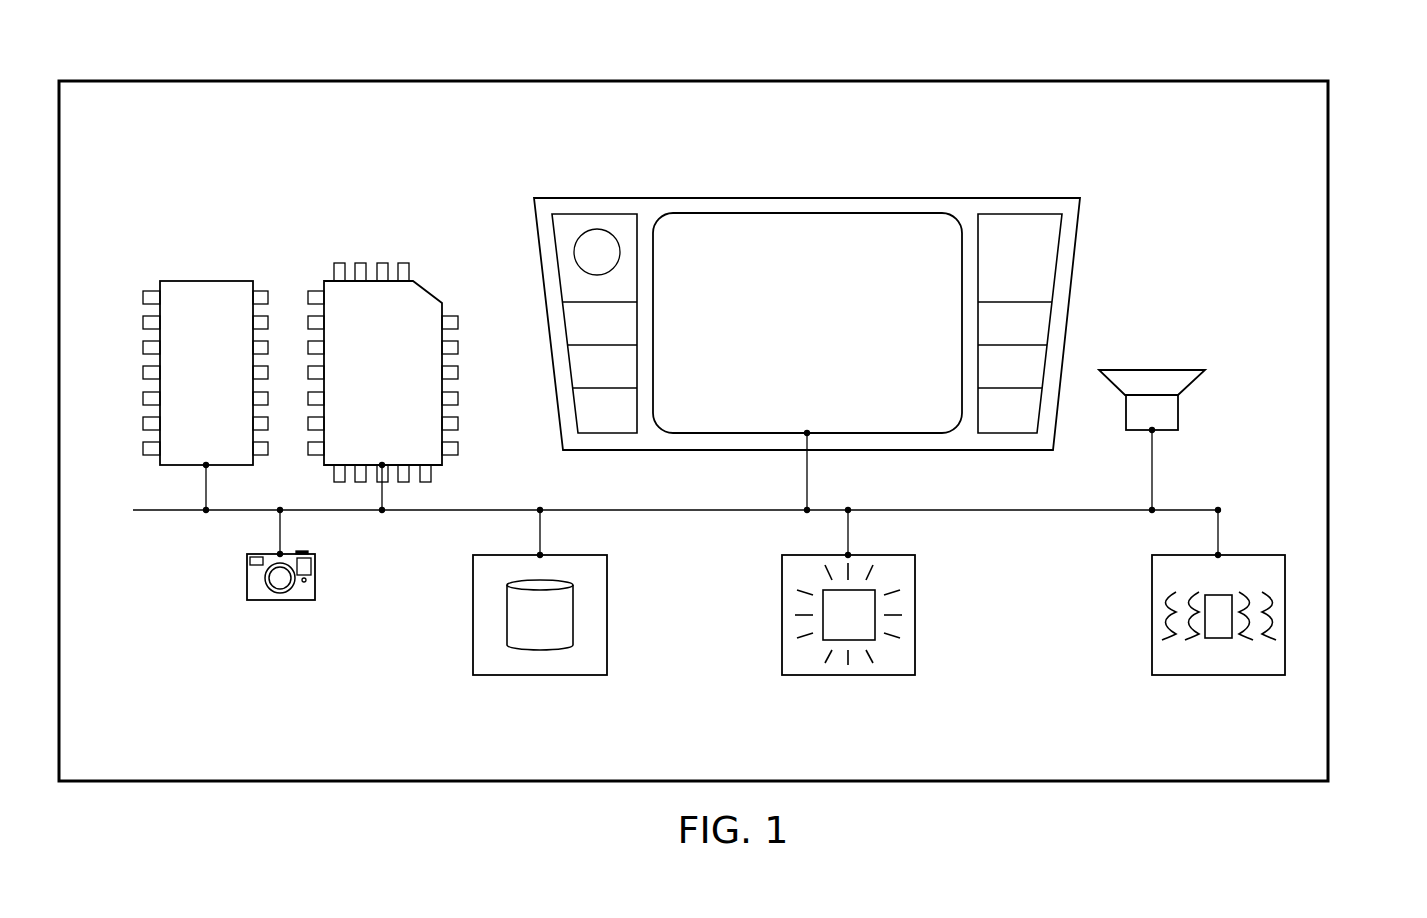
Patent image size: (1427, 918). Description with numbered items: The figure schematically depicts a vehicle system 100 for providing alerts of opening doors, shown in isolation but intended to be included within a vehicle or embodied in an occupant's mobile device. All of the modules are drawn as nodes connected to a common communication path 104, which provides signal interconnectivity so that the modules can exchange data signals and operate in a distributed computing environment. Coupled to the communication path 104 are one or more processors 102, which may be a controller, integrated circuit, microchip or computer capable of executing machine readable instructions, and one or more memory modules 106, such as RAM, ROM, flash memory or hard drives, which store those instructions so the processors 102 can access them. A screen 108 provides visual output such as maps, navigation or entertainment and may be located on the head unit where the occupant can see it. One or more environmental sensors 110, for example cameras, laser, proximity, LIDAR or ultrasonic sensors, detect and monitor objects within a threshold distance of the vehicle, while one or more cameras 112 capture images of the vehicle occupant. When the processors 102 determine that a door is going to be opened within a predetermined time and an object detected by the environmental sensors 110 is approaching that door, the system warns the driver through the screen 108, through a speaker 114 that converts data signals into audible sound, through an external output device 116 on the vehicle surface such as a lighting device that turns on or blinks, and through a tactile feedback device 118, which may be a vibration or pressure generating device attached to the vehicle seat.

The vehicle system 100 is at (1364, 176).
The processors 102 is at (193, 281).
The communication path 104 is at (133, 511).
The memory modules 106 is at (413, 281).
The screen 108 is at (872, 198).
The environmental sensors 110 is at (530, 675).
The cameras 112 is at (277, 600).
The speaker 114 is at (1148, 370).
The external output device 116 is at (848, 675).
The tactile feedback device 118 is at (1210, 675).